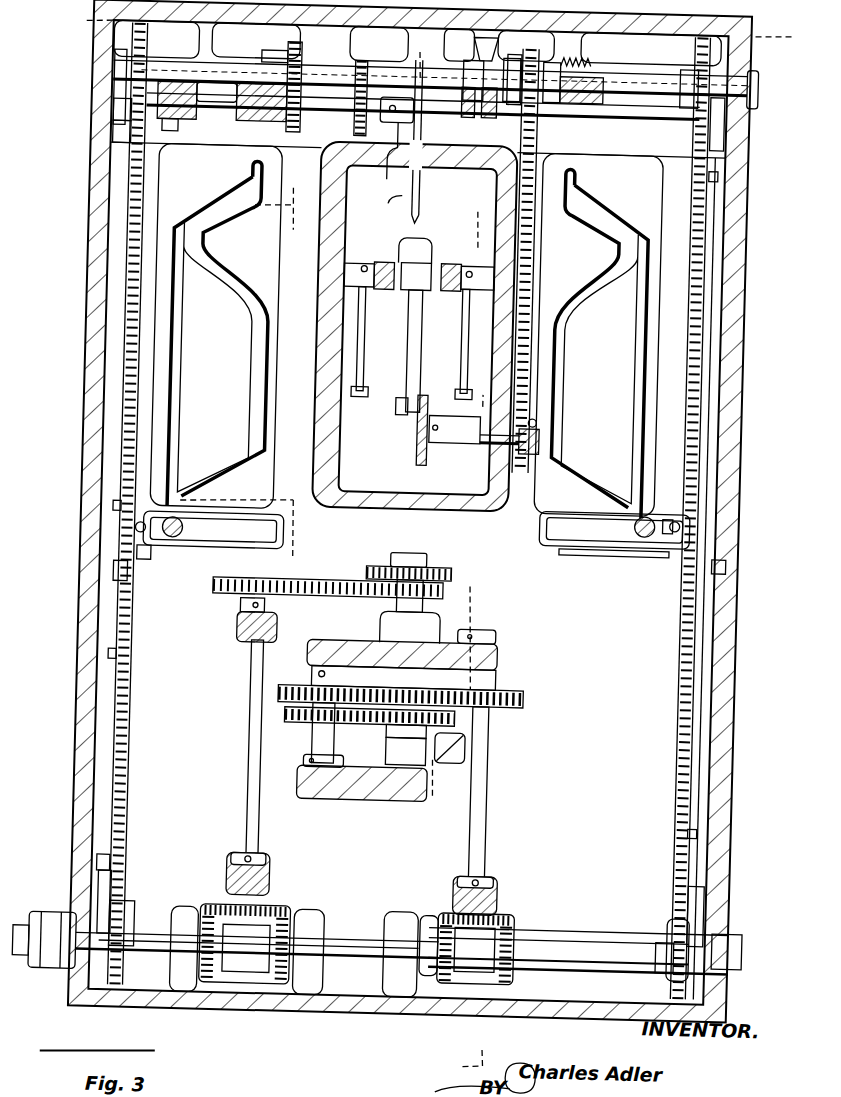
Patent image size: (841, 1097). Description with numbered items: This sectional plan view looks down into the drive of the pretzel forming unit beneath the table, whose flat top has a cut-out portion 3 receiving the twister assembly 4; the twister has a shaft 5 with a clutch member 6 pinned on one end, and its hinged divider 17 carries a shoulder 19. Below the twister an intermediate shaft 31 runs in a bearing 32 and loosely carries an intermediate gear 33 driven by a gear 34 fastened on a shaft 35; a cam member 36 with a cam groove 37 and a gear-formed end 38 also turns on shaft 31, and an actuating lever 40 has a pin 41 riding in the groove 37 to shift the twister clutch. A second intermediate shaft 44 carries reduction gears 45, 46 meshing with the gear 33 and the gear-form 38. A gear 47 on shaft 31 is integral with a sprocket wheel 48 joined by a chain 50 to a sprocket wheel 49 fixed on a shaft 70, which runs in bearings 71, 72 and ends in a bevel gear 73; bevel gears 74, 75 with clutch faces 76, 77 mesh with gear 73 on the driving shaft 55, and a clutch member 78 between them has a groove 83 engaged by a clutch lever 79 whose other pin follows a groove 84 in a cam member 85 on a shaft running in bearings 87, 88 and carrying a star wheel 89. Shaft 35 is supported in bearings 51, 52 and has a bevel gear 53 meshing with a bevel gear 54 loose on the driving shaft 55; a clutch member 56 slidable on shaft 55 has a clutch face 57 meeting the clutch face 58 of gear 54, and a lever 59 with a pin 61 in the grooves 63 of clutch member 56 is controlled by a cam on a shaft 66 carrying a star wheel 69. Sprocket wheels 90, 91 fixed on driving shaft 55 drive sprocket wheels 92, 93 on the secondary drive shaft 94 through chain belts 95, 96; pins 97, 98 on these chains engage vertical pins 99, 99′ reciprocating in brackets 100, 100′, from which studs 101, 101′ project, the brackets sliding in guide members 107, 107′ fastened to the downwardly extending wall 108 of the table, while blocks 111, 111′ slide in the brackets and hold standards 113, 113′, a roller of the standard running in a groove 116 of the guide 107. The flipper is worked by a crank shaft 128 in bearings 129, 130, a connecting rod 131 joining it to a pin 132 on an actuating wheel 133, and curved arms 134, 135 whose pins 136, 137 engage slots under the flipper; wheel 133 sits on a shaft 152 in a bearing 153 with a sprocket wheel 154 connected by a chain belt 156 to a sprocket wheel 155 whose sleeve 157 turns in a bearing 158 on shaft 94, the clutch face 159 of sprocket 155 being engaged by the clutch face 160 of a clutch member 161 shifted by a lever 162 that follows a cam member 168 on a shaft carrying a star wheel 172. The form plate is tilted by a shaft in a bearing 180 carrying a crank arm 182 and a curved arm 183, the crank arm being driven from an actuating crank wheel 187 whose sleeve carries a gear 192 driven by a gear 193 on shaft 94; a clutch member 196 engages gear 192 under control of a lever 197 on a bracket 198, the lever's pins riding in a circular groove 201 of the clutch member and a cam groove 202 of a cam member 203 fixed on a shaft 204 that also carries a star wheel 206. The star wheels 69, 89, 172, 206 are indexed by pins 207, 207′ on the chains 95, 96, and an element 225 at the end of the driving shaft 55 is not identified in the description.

The cut-out portion 3 is at (76, 23).
The operative assembly 4 is at (404, 58).
The shaft 5 is at (783, 27).
The clutch member 6 is at (287, 189).
The divider 17 is at (461, 215).
The shoulder 19 is at (478, 589).
The intermediate shaft 31 is at (415, 800).
The bearing 32 is at (398, 800).
The intermediate gear 33 is at (459, 667).
The gear 34 is at (528, 694).
The shaft 35 is at (494, 763).
The cam member 36 is at (392, 749).
The cam groove 37 is at (392, 733).
The gear-formed end 38 is at (460, 717).
The actuating lever 40 is at (452, 759).
The pin 41 is at (405, 773).
The second intermediate shaft 44 is at (298, 758).
The reduction gear 45 is at (283, 699).
The reduction gear 46 is at (290, 720).
The gear 47 is at (455, 570).
The sprocket wheel 48 is at (426, 605).
The sprocket wheel 49 is at (243, 611).
The chain 50 is at (364, 601).
The bearing 51 is at (501, 650).
The bearing 52 is at (508, 893).
The bevel gear 53 is at (504, 923).
The bevel gear 54 is at (467, 970).
The driving shaft 55 is at (382, 958).
The clutch member 56 is at (517, 952).
The clutch face 57 is at (494, 966).
The clutch face 58 is at (480, 968).
The lever 59 is at (507, 961).
The pin 61 is at (532, 955).
The grooves 63 is at (511, 947).
The shaft 66 is at (611, 925).
The star wheel 69 is at (713, 904).
The shaft 70 is at (256, 779).
The bearing 71 is at (240, 634).
The bearing 72 is at (237, 883).
The bevel gear 73 is at (290, 915).
The bevel gear 74 is at (301, 970).
The bevel gear 75 is at (216, 935).
The clutch face 76 is at (255, 965).
The clutch face 77 is at (227, 975).
The clutch member 78 is at (261, 975).
The clutch lever 79 is at (269, 970).
The groove 83 is at (276, 965).
The groove 84 is at (244, 965).
The cam member 85 is at (256, 924).
The bearing 87 is at (326, 922).
The bearing 88 is at (110, 913).
The star wheel 89 is at (110, 878).
The sprocket wheel 90 is at (139, 952).
The sprocket wheel 91 is at (674, 960).
The sprocket wheel 92 is at (103, 113).
The sprocket wheel 93 is at (689, 93).
The secondary drive shaft 94 is at (747, 70).
The chain belt 95 is at (127, 407).
The chain belt 96 is at (699, 425).
The pin 97 is at (120, 593).
The pin 98 is at (727, 559).
The vertical pin 99 is at (136, 535).
The vertical pin 99′ is at (680, 520).
The bracket 100 is at (201, 552).
The bracket 100′ is at (619, 543).
The stud 101 is at (151, 567).
The stud 101′ is at (677, 517).
The guide member 107 is at (146, 272).
The guide member 107′ is at (664, 343).
The downwardly extending wall 108 is at (103, 736).
The block 111 is at (178, 531).
The block 111′ is at (635, 518).
The standard 113 is at (328, 578).
The standard 113′ is at (640, 552).
The groove 116 is at (178, 442).
The crank shaft 128 is at (428, 262).
The bearing 129 is at (347, 265).
The bearing 130 is at (478, 265).
The connecting rod 131 is at (404, 365).
The pin 132 is at (399, 418).
The actuating wheel 133 is at (417, 458).
The curved arm 134 is at (360, 366).
The curved arm 135 is at (457, 363).
The pin 136 is at (349, 389).
The pin 137 is at (467, 386).
The shaft 152 is at (535, 420).
The bearing 153 is at (468, 443).
The sprocket wheel 154 is at (538, 437).
The sprocket wheel 155 is at (550, 114).
The chain belt 156 is at (529, 263).
The sleeve 157 is at (577, 99).
The bearing 158 is at (576, 57).
The clutch face 159 is at (482, 116).
The clutch face 160 is at (464, 78).
The clutch member 161 is at (457, 116).
The lever 162 is at (500, 61).
The cam member 168 is at (576, 168).
The star wheel 172 is at (714, 132).
The bearing 180 is at (388, 127).
The crank arm 182 is at (366, 179).
The curved arm 183 is at (413, 186).
The actuating crank wheel 187 is at (381, 98).
The gear 192 is at (348, 123).
The gear 193 is at (278, 49).
The clutch member 196 is at (241, 165).
The lever 197 is at (103, 66).
The bracket 198 is at (270, 60).
The circular groove 201 is at (260, 125).
The cam groove 202 is at (165, 137).
The cam member 203 is at (180, 124).
The shaft 204 is at (206, 96).
The star wheel 206 is at (103, 138).
The pin 207 is at (705, 827).
The pin 207′ is at (709, 169).
The hand wheel 225 is at (57, 977).